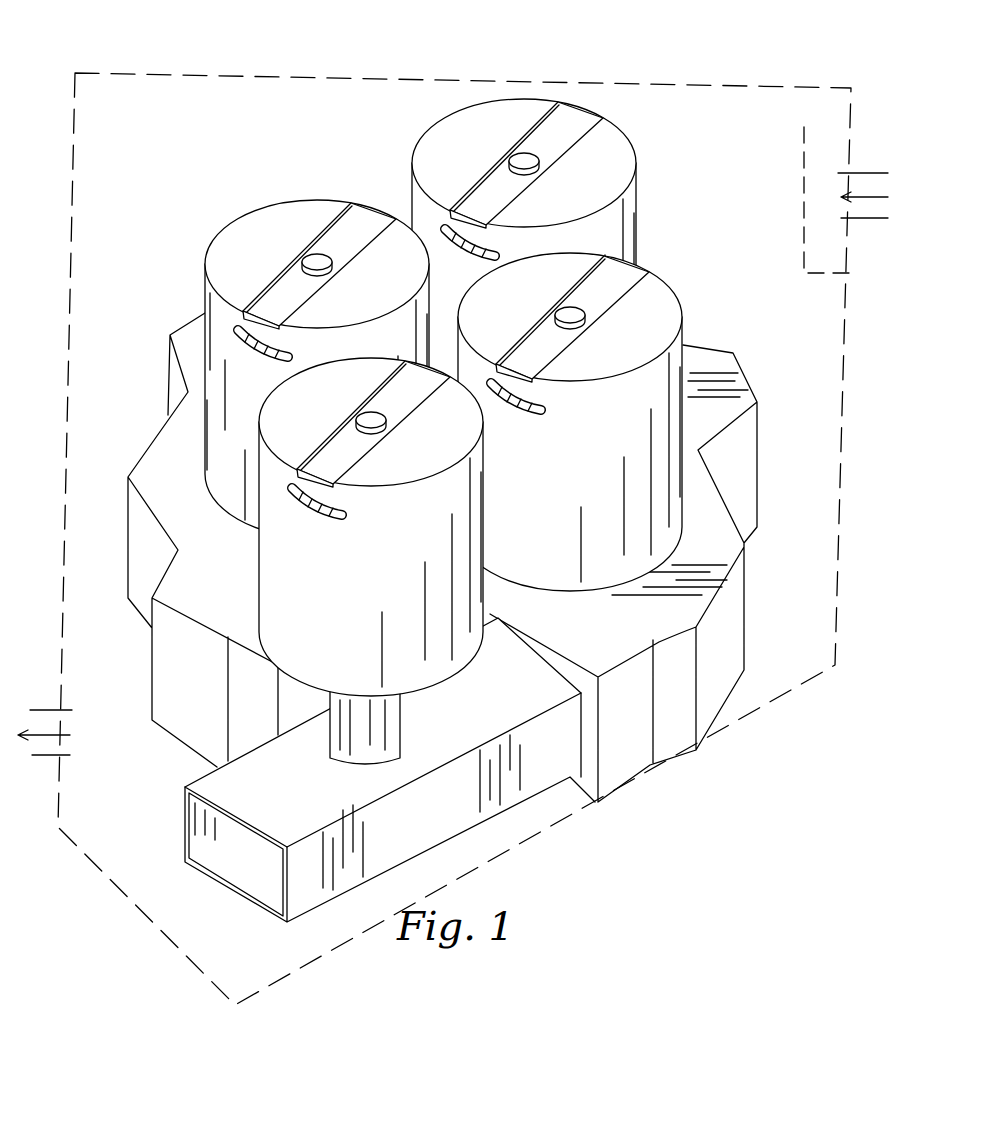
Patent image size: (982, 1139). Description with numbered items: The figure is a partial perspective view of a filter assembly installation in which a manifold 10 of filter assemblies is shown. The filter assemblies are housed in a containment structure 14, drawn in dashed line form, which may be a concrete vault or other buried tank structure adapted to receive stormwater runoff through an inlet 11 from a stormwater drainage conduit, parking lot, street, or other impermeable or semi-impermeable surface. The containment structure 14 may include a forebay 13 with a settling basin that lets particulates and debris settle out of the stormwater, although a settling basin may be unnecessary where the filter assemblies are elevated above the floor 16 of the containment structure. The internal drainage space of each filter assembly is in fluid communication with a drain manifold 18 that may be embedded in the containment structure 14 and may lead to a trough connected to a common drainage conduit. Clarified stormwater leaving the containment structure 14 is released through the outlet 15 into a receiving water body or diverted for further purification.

The manifold 10 is at (466, 525).
The inlet 11 is at (840, 184).
The forebay 13 is at (819, 233).
The containment structure 14 is at (80, 126).
The outlet 15 is at (72, 713).
The floor 16 is at (616, 621).
The drain manifold 18 is at (440, 803).